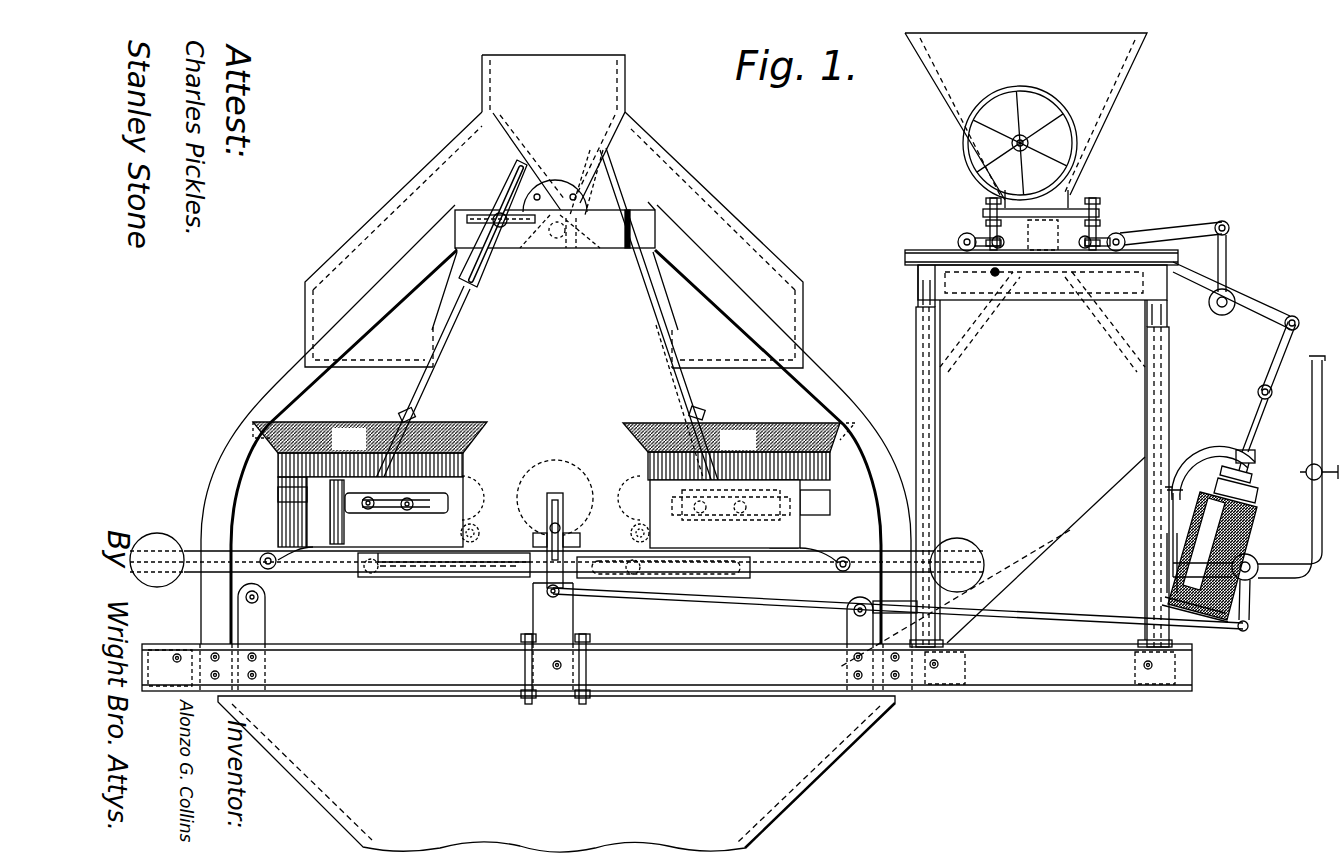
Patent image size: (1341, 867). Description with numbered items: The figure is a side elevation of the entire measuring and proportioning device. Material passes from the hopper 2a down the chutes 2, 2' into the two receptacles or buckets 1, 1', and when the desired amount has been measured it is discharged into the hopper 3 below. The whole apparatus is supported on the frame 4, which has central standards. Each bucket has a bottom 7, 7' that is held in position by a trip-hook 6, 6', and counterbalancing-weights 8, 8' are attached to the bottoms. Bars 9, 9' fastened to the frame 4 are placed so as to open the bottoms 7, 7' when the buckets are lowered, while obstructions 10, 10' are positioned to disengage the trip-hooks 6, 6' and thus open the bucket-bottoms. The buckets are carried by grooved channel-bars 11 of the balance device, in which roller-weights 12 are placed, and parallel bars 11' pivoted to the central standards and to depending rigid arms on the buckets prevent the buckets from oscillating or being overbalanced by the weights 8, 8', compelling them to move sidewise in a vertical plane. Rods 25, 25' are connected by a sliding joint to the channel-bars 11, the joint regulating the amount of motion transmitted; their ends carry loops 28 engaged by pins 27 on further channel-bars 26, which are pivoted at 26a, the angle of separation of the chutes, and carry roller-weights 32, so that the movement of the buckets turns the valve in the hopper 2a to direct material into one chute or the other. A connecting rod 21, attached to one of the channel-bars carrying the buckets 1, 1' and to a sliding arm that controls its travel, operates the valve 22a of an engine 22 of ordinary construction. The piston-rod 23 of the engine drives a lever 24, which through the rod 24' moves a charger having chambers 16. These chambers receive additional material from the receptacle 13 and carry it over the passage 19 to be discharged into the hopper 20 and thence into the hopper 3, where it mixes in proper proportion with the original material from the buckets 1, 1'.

The receptacle or bucket 1 is at (370, 484).
The receptacle or bucket 1' is at (739, 485).
The chute 2 is at (393, 239).
The chute 2' is at (714, 240).
The hopper of the chutes 2a is at (553, 133).
The hopper 3 is at (556, 774).
The frame 4 is at (667, 669).
The trip-hook 6 is at (478, 517).
The trip-hook 6' is at (624, 517).
The bucket bottom 7 is at (557, 574).
The bucket bottom 7' is at (839, 564).
The counterbalancing-weight 8 is at (157, 560).
The counterbalancing-weight 8' is at (957, 565).
The bar 9 is at (251, 614).
The bar 9' is at (856, 622).
The obstruction 10 is at (454, 568).
The obstruction 10' is at (663, 567).
The grooved channel-bar 11 is at (539, 512).
The parallel bar 11' is at (444, 577).
The roller-weight 12 is at (555, 492).
The receptacle 13 is at (1026, 120).
The charger chamber 16 is at (1041, 235).
The passage 19 is at (1042, 318).
The hopper 20 is at (1009, 458).
The connecting rod 21 is at (897, 608).
The engine 22 is at (1210, 534).
The engine valve 22a is at (1252, 578).
The piston-rod 23 is at (1241, 438).
The lever 24 is at (1236, 317).
The rod 24' is at (1174, 224).
The rod 25 is at (417, 395).
The rod 25' is at (662, 324).
The channel-bar 26 is at (575, 250).
The pivot-shaft 26a is at (556, 205).
The pin 27 is at (490, 215).
The loop 28 is at (493, 218).
The roller-weight 32 is at (548, 250).